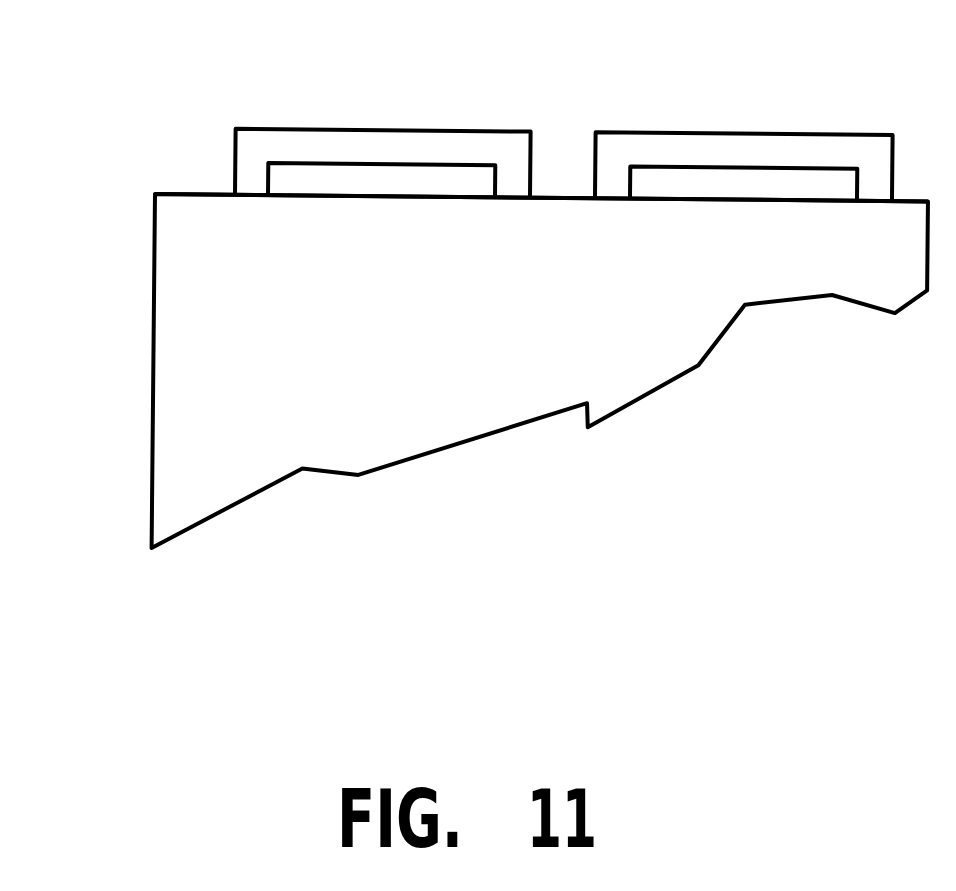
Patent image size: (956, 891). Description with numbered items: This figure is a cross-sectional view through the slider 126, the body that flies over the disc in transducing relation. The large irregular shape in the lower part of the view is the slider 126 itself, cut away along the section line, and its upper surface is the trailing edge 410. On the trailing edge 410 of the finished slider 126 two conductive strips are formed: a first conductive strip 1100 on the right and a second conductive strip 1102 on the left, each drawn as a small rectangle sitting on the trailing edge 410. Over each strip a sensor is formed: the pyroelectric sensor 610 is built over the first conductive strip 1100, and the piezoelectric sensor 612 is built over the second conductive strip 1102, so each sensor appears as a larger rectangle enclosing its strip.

The slider 126 is at (185, 373).
The trailing edge 410 is at (192, 193).
The piezoelectric sensor 612 is at (311, 136).
The second conductive strip 1102 is at (433, 183).
The pyroelectric sensor 610 is at (660, 137).
The first conductive strip 1100 is at (797, 183).